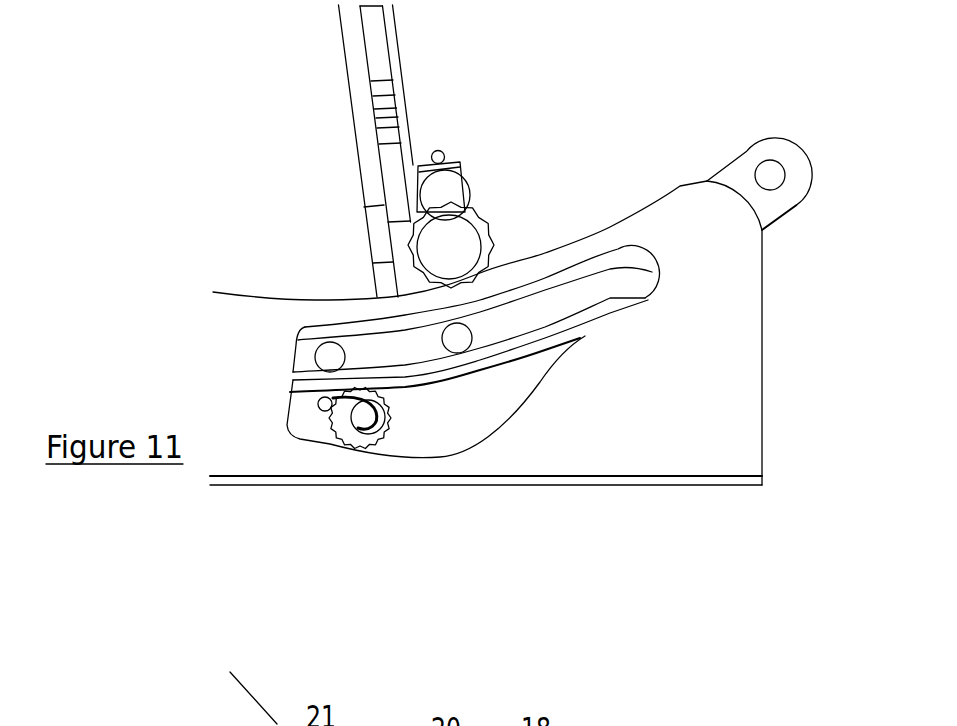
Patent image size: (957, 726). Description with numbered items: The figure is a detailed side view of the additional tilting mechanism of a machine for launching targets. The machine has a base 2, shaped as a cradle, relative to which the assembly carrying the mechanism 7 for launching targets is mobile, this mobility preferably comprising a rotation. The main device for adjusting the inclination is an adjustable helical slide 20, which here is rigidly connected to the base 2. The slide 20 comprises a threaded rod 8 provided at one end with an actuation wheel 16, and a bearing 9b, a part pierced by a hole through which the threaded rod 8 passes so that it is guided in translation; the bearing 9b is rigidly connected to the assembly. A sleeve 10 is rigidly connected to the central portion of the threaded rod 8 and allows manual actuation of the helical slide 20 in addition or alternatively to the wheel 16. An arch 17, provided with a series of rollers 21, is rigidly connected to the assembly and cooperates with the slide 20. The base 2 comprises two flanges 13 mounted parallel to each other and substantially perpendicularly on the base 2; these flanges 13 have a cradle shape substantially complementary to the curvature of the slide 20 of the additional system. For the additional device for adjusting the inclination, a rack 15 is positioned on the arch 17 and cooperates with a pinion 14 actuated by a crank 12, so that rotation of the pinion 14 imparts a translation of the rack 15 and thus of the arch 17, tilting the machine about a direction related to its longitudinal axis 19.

The base 2 is at (668, 452).
The mechanism for launching targets 7 is at (385, 58).
The threaded rod 8 is at (438, 150).
The bearing 9b is at (455, 157).
The sleeve 10 is at (467, 182).
The crank 12 is at (350, 415).
The flanges 13 is at (733, 403).
The pinion 14 is at (362, 440).
The rack 15 is at (427, 387).
The actuation wheel 16 is at (453, 255).
The arch 17 is at (742, 163).
The longitudinal axis 19 is at (790, 215).
The slide 20 is at (583, 327).
The rollers 21 is at (328, 352).